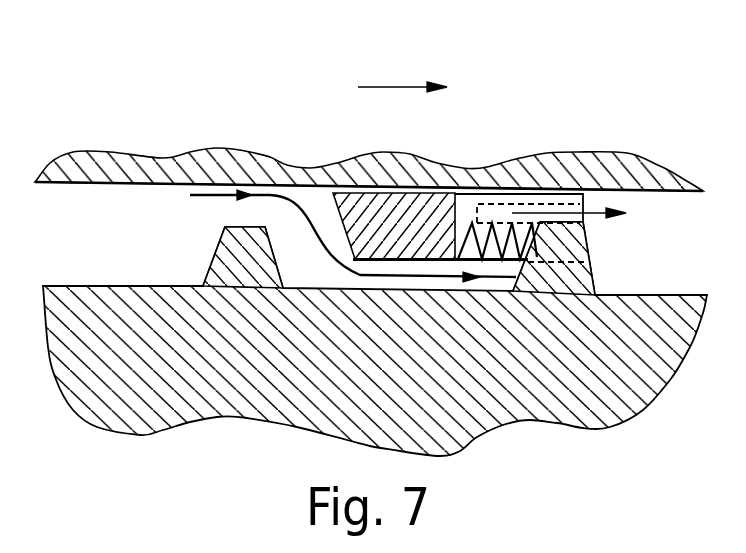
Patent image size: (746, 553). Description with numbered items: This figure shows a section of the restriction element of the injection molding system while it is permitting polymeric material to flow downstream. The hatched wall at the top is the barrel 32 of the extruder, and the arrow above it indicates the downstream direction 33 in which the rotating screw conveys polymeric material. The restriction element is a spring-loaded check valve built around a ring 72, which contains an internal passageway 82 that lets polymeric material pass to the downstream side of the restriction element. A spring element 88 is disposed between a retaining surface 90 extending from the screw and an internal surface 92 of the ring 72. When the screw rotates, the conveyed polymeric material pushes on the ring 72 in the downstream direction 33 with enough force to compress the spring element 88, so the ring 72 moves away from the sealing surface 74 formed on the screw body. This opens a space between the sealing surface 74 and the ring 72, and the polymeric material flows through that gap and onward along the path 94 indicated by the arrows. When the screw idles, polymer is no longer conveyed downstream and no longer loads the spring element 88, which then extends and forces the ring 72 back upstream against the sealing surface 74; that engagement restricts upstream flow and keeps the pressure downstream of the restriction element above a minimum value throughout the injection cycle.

The barrel 32 is at (627, 180).
The downstream direction 33 is at (402, 76).
The ring 72 is at (425, 208).
The sealing surface 74 is at (283, 280).
The internal passageway 82 is at (532, 204).
The spring element 88 is at (492, 214).
The retaining surface 90 is at (534, 258).
The internal surface 92 is at (463, 204).
The path 94 is at (366, 277).